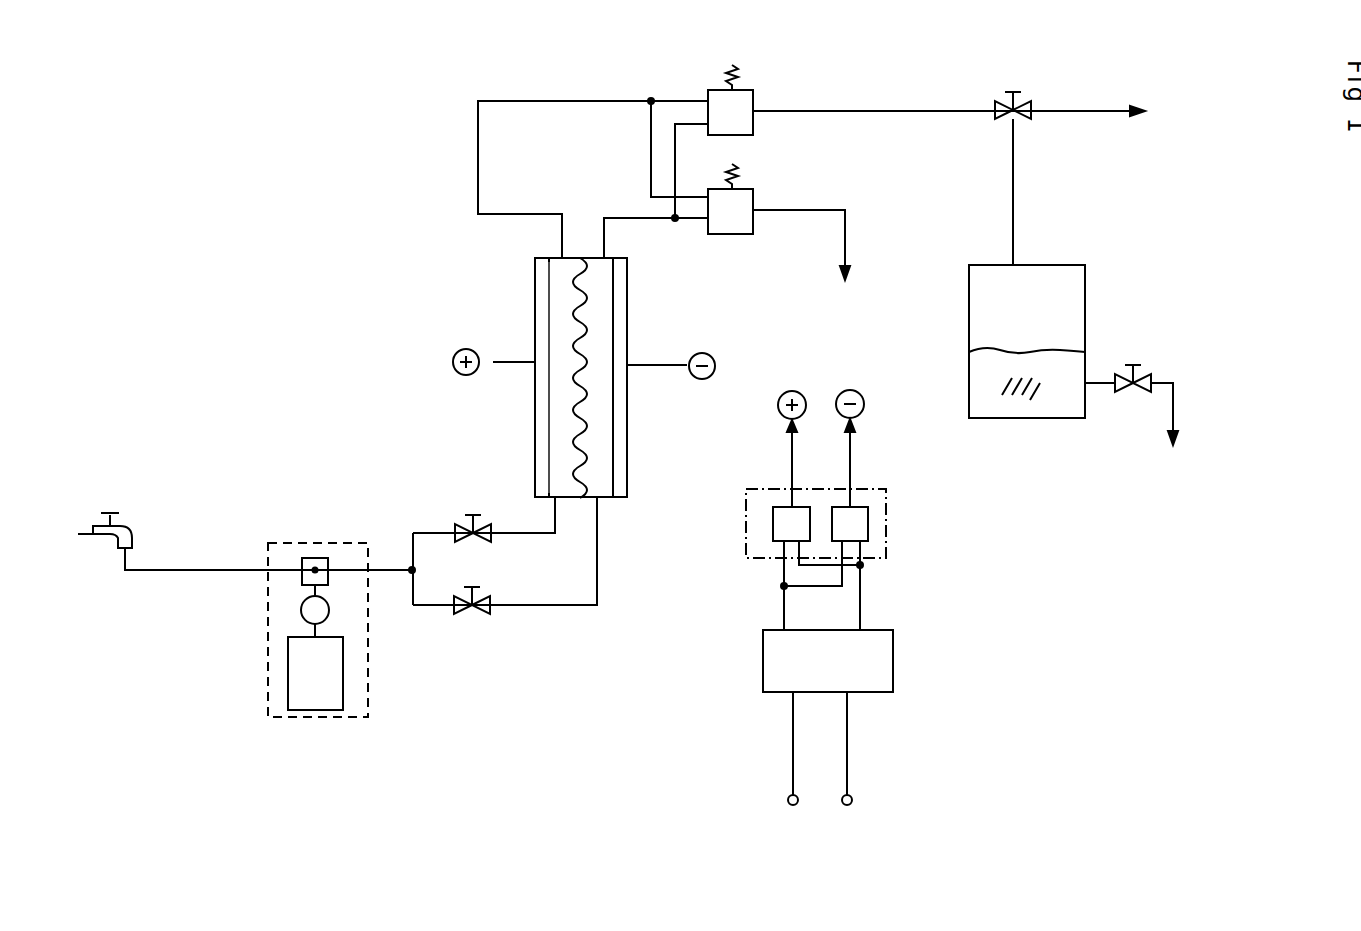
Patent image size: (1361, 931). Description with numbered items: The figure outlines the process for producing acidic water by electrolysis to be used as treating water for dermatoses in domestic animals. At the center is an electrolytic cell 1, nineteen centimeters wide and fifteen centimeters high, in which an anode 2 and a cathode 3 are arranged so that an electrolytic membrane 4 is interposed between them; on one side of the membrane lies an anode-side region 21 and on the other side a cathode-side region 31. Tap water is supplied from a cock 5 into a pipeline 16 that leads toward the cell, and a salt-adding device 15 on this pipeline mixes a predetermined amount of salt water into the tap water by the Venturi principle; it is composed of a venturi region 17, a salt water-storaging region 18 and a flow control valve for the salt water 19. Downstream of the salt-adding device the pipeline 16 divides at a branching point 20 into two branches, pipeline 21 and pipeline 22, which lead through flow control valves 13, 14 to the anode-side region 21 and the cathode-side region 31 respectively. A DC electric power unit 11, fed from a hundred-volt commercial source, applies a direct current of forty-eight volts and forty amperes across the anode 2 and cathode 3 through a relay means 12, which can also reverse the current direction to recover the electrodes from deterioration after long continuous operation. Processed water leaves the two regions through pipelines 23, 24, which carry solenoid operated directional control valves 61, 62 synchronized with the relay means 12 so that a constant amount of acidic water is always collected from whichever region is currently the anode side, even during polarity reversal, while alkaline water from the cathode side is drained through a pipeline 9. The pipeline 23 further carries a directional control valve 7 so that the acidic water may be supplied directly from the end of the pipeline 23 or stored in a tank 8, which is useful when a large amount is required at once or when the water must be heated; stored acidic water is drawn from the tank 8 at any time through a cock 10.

The electrolytic cell 1 is at (535, 270).
The anode 2 is at (535, 318).
The anode-side region 21 is at (532, 545).
The cathode 3 is at (628, 323).
The cathode-side region 31 is at (598, 423).
The electrolytic membrane 4 is at (587, 303).
The cock 5 is at (117, 510).
The solenoid operated directional control valve 61 is at (753, 90).
The solenoid operated directional control valve 62 is at (753, 189).
The directional control valve 7 is at (1025, 103).
The tank 8 is at (1085, 275).
The pipeline 9 is at (855, 232).
The cock 10 is at (1140, 372).
The DC electric power unit 11 is at (893, 658).
The relay means 12 is at (886, 505).
The flow control valve 13 is at (470, 512).
The flow control valve 14 is at (483, 615).
The salt-adding device 15 is at (283, 542).
The pipeline 16 is at (148, 572).
The venturi region 17 is at (318, 557).
The salt water-storaging region 18 is at (343, 680).
The flow control valve for the salt water 19 is at (300, 610).
The branching point 20 is at (412, 568).
The pipeline 22 is at (583, 607).
The pipeline 23 is at (478, 137).
The pipeline 24 is at (604, 237).